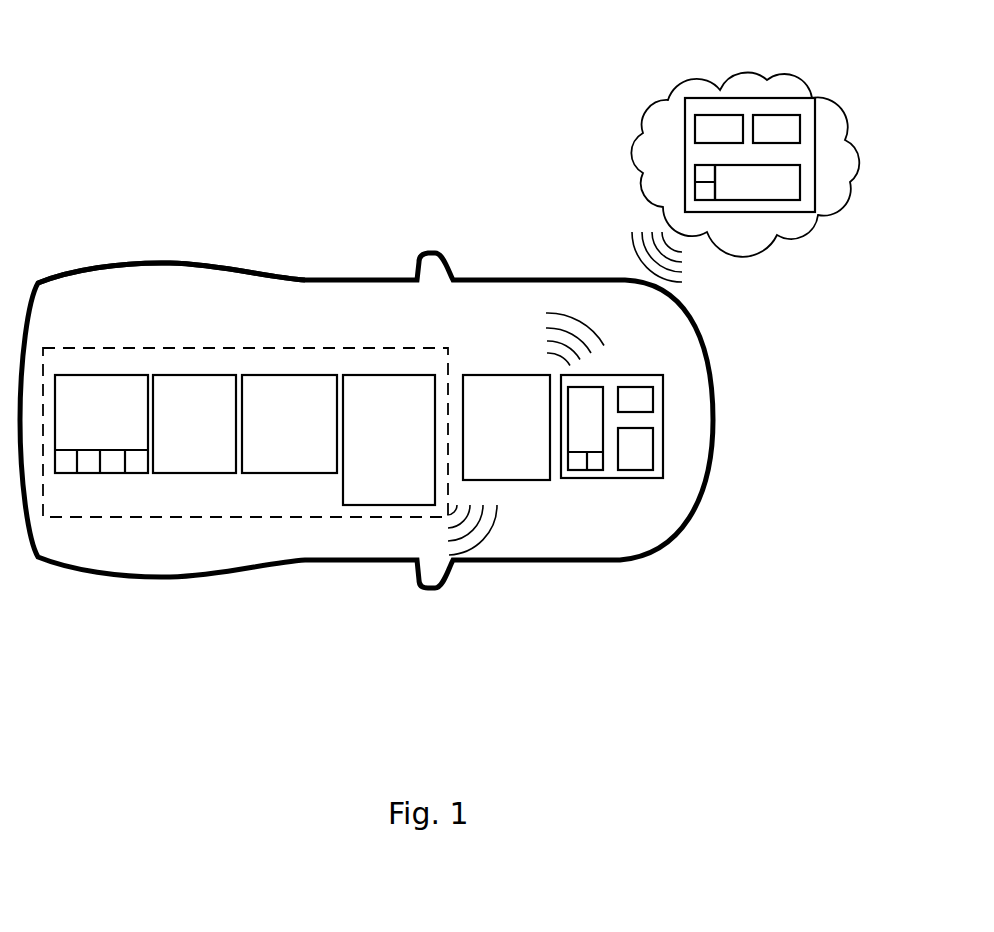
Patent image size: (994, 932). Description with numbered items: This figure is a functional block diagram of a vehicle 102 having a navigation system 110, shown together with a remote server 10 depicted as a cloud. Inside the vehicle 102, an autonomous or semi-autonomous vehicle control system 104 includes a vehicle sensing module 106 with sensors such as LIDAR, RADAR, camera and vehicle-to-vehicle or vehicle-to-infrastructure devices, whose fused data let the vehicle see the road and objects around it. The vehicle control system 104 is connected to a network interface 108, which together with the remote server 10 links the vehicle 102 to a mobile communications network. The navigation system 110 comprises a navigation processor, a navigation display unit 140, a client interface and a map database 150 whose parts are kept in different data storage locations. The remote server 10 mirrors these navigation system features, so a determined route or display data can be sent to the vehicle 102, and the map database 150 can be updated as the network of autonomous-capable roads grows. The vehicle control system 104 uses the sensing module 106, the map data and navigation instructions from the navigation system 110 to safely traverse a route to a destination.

The remote server 10 is at (787, 236).
The vehicle 102 is at (487, 566).
The vehicle control system 104 is at (305, 306).
The vehicle sensing module 106 is at (290, 509).
The network interface 108 is at (504, 378).
The navigation system 110 is at (661, 420).
The navigation display unit 140 is at (643, 477).
The map database 150 is at (599, 379).